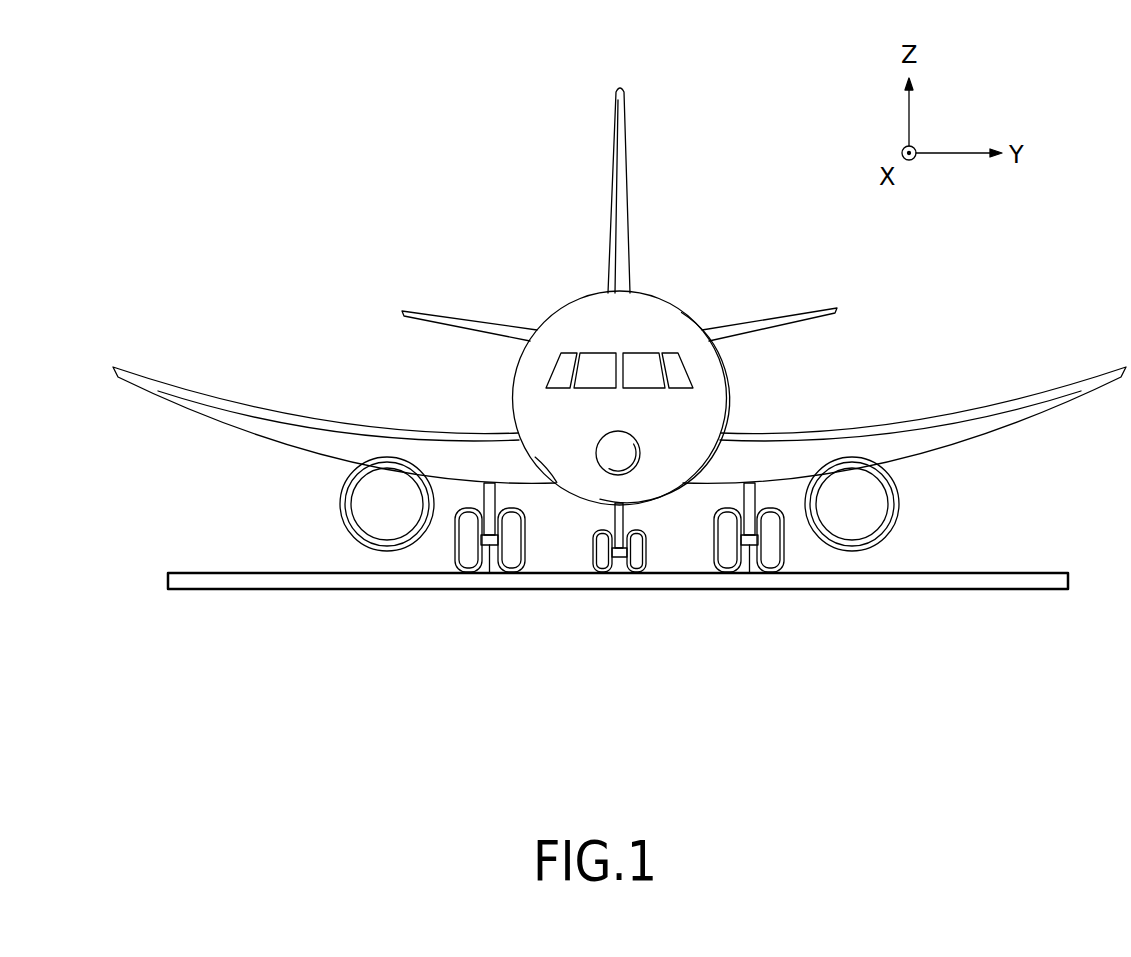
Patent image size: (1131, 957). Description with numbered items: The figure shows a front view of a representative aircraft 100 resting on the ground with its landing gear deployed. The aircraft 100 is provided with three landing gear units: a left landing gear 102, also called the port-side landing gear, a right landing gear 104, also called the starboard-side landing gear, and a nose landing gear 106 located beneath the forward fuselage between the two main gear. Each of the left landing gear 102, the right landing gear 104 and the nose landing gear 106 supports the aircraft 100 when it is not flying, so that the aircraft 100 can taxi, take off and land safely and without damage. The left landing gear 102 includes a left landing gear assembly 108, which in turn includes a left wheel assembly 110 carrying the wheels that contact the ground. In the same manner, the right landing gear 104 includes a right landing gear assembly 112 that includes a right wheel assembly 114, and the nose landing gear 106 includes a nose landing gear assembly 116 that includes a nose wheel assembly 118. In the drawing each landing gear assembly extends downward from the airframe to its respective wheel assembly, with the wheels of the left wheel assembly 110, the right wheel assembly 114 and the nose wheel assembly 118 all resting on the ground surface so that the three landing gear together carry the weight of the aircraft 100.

The aircraft 100 is at (436, 188).
The left landing gear 102 is at (828, 565).
The right landing gear 104 is at (458, 476).
The nose landing gear 106 is at (569, 570).
The left landing gear assembly 108 is at (736, 494).
The left wheel assembly 110 is at (746, 547).
The right landing gear assembly 112 is at (480, 527).
The right wheel assembly 114 is at (490, 573).
The nose landing gear assembly 116 is at (625, 512).
The nose wheel assembly 118 is at (619, 557).